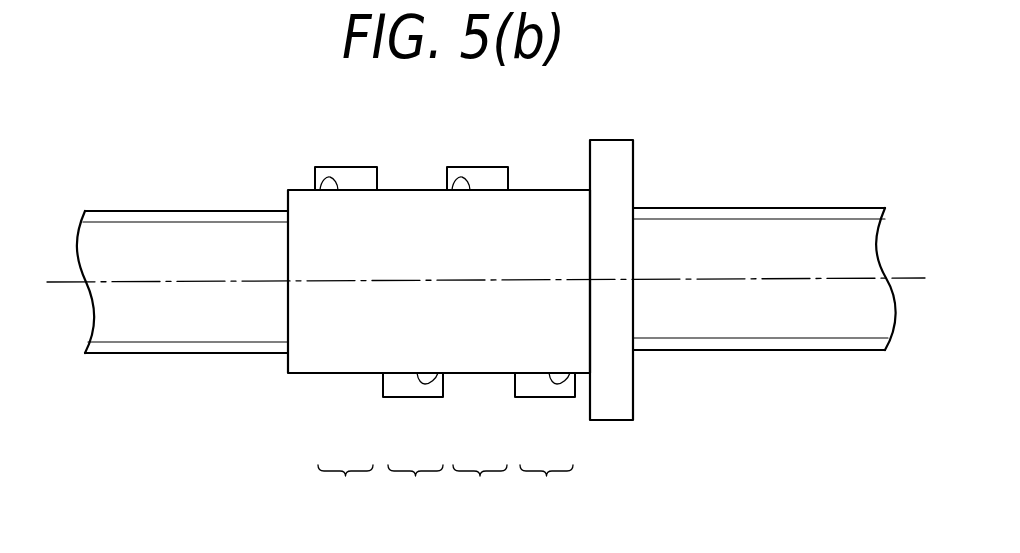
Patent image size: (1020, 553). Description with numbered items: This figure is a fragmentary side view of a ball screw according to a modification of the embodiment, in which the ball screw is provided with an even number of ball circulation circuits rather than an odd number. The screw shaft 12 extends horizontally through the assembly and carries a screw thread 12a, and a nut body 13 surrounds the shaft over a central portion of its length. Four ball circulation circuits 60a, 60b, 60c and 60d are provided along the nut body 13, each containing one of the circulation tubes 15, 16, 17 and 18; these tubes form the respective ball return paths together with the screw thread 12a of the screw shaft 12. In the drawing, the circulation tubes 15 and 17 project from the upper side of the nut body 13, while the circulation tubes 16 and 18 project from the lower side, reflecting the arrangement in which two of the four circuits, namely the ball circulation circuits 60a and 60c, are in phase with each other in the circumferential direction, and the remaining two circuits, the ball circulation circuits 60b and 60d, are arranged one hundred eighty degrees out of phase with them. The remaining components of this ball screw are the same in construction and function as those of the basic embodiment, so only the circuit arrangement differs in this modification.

The screw shaft 12 is at (183, 340).
The screw thread 12a is at (108, 352).
The cylindrical body / sleeve 13 is at (338, 360).
The circulation tube 15 is at (325, 190).
The circulation tube 16 is at (437, 375).
The circulation tube 17 is at (455, 190).
The circulation tube 18 is at (569, 375).
The ball circulation circuit 60a is at (346, 489).
The ball circulation circuit 60b is at (416, 489).
The ball circulation circuit 60c is at (481, 489).
The ball circulation circuit 60d is at (548, 489).